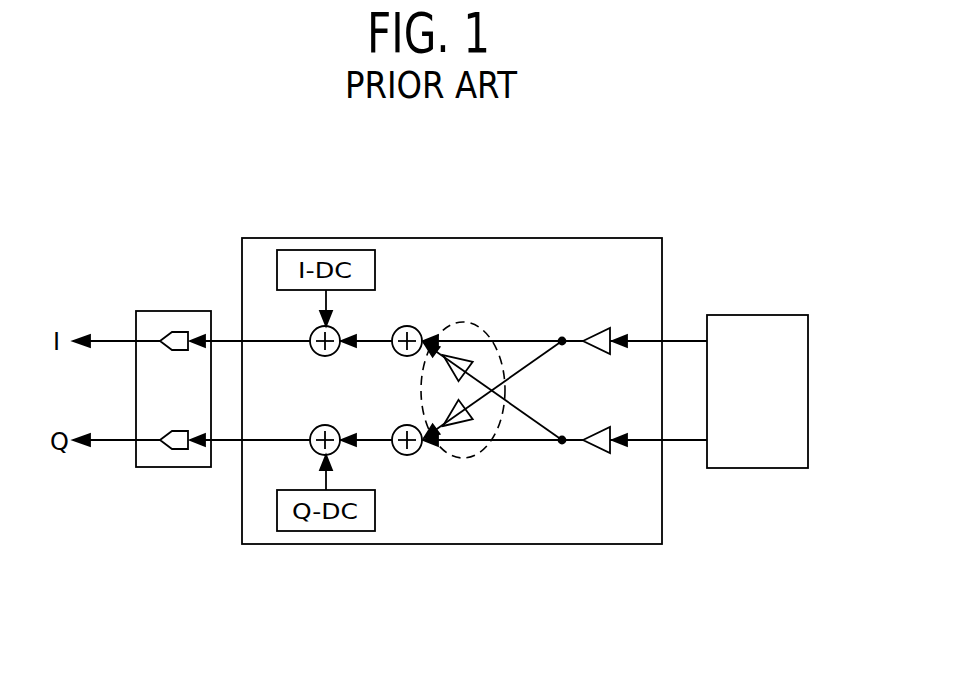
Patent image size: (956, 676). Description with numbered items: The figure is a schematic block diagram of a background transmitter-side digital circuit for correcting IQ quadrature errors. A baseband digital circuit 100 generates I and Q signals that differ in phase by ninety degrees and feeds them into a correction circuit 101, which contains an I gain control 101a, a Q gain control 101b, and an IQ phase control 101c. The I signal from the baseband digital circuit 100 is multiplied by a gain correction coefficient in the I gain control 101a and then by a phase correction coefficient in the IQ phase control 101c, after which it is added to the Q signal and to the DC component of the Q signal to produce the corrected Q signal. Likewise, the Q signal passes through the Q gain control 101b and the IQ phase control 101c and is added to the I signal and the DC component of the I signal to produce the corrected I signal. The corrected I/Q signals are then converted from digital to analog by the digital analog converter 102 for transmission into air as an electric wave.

The baseband digital circuit 100 is at (780, 470).
The correction circuit 101 is at (590, 237).
The I gain control 101a is at (593, 355).
The Q gain control 101b is at (593, 454).
The IQ phase control 101c is at (473, 458).
The digital analog converter 102 is at (183, 311).